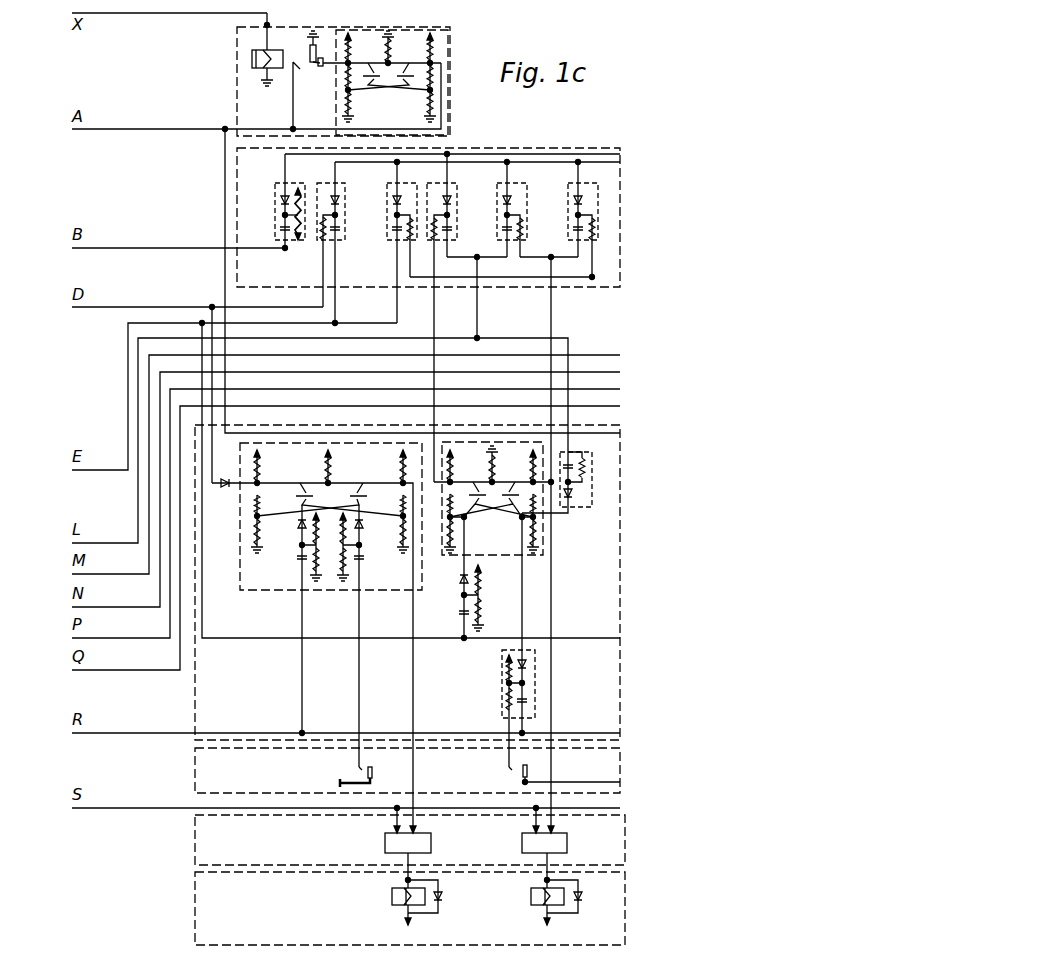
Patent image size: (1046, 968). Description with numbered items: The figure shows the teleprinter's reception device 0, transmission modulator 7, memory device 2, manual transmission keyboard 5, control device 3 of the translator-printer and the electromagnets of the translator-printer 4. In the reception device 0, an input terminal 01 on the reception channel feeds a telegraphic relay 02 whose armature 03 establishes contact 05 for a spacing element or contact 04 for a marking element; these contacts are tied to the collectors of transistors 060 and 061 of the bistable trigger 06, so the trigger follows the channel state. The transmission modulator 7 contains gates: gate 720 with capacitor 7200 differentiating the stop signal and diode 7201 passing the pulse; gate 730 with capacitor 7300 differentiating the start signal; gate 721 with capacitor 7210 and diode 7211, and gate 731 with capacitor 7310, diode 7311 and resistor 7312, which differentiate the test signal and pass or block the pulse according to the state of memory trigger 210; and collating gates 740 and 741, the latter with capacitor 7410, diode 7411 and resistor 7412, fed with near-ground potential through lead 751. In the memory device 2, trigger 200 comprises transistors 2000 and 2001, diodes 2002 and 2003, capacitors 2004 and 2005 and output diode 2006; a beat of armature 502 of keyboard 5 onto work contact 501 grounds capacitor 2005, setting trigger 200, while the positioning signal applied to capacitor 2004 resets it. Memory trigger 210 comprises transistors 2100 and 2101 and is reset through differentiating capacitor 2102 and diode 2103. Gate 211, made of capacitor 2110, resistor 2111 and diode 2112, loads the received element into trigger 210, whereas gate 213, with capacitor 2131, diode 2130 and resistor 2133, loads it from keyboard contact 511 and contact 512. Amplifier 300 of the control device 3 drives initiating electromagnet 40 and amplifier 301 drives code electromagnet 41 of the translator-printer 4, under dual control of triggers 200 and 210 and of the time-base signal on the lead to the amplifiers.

The reception device 0 is at (333, 27).
The input terminal 01 is at (277, 17).
The telegraphic relay 02 is at (262, 52).
The armature 03 is at (310, 50).
The contact 04 is at (302, 95).
The contact 05 is at (320, 68).
The bistable trigger 06 is at (336, 113).
The transistor 060 is at (406, 65).
The transistor 061 is at (369, 65).
The transmission modulator 7 is at (527, 148).
The gate cell 720 is at (280, 184).
The diode 7201 is at (280, 200).
The capacitor 7200 is at (280, 232).
The gate cell 730 is at (323, 184).
The capacitor 7300 is at (346, 234).
The collating gate 740 is at (390, 184).
The gate 721 is at (435, 184).
The diode 7211 is at (452, 199).
The capacitor 7210 is at (452, 227).
The diode 7311 is at (503, 197).
The gate 731 is at (510, 186).
The capacitor 7310 is at (503, 230).
The resistor 7312 is at (524, 232).
The gate 741 is at (585, 186).
The diode 7411 is at (573, 200).
The capacitor 7410 is at (573, 227).
The resistor 7412 is at (594, 236).
The lead 751 is at (528, 277).
The memory device 2 is at (195, 708).
The trigger 200 is at (252, 591).
The transistor 2000 is at (308, 485).
The transistor 2001 is at (353, 485).
The diode 2002 is at (298, 525).
The diode 2003 is at (363, 525).
The capacitor 2004 is at (299, 559).
The capacitor 2005 is at (362, 559).
The diode 2006 is at (225, 490).
The memory trigger 210 is at (500, 555).
The transistor 2100 is at (479, 484).
The transistor 2101 is at (509, 484).
The differentiating capacitor 2102 is at (460, 612).
The diode 2103 is at (460, 579).
The gate 211 is at (580, 508).
The capacitor 2110 is at (584, 463).
The resistor 2111 is at (589, 470).
The diode 2112 is at (580, 492).
The gate 213 is at (502, 656).
The resistor 2133 is at (505, 669).
The diode 2130 is at (506, 685).
The capacitor 2131 is at (519, 703).
The manual transmission keyboard 5 is at (195, 773).
The work contact 501 is at (371, 761).
The armature 502 is at (373, 772).
The contact 511 is at (522, 761).
The switch contact 512 is at (520, 776).
The control device of the translator-printer 3 is at (195, 846).
The amplifier 300 is at (408, 830).
The amplifier 301 is at (544, 830).
The translator-printer 4 is at (195, 916).
The initiating electromagnet 40 is at (392, 898).
The code electromagnet 41 is at (531, 898).